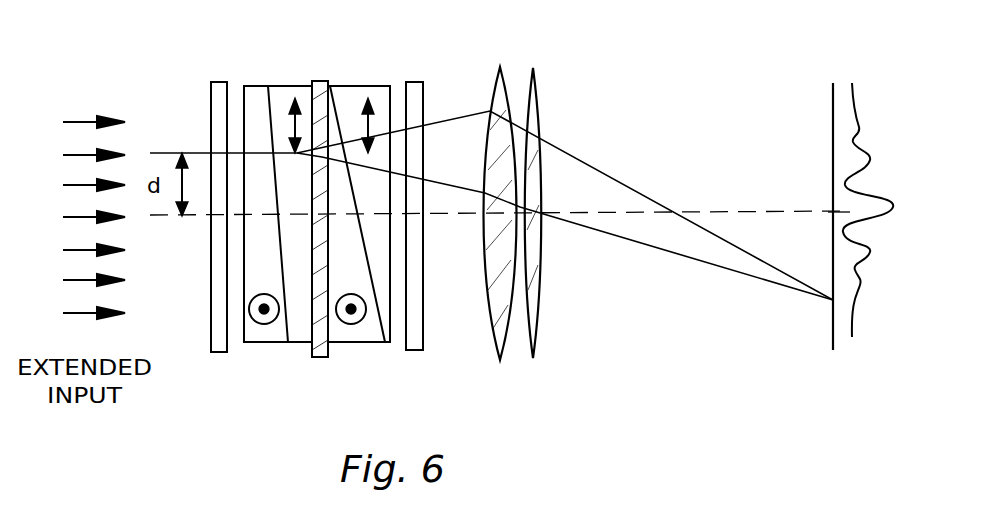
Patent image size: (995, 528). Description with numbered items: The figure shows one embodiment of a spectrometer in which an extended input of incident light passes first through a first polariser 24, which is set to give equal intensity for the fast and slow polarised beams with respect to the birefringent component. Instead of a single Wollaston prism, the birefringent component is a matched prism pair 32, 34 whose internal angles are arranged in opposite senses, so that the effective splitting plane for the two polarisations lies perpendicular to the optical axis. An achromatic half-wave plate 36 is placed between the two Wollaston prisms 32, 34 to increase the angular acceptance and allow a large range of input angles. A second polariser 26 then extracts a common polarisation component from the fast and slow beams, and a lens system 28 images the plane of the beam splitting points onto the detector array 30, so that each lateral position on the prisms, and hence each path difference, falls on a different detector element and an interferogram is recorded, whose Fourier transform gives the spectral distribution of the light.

The first polariser 24 is at (220, 352).
The second polariser 26 is at (411, 350).
The lens system 28 is at (530, 54).
The detector array 30 is at (833, 350).
The first Wollaston prism of matched prism pair 32 is at (270, 86).
The second Wollaston prism of matched prism pair 34 is at (373, 86).
The achromatic half-wave plate 36 is at (325, 357).